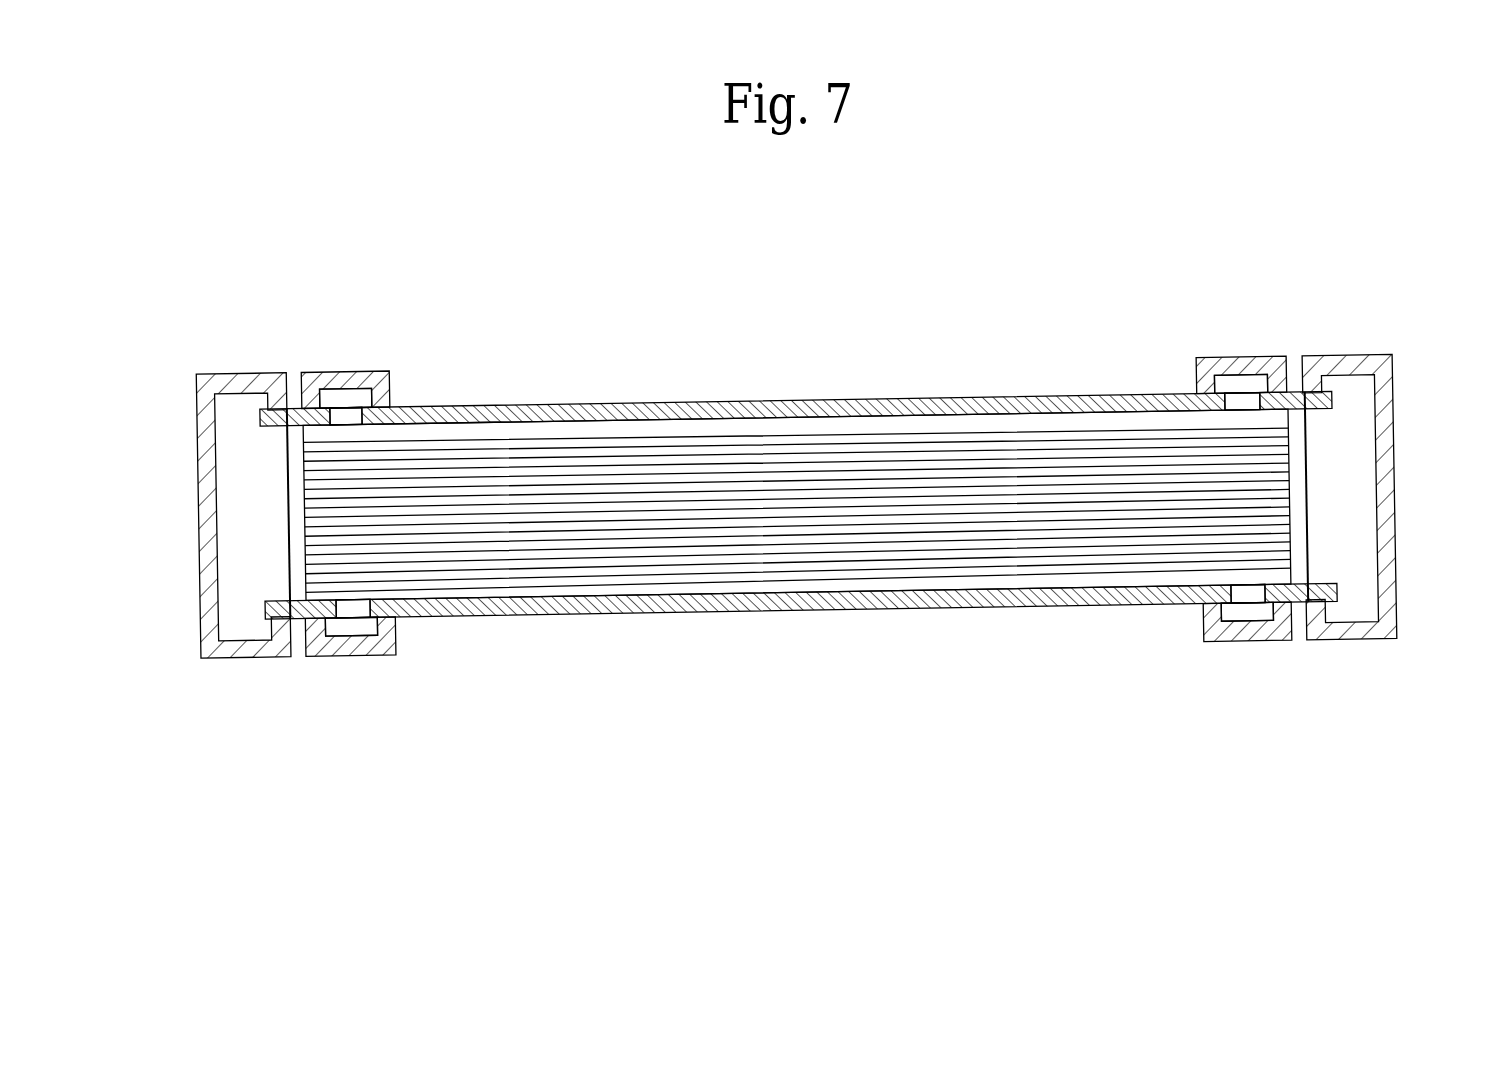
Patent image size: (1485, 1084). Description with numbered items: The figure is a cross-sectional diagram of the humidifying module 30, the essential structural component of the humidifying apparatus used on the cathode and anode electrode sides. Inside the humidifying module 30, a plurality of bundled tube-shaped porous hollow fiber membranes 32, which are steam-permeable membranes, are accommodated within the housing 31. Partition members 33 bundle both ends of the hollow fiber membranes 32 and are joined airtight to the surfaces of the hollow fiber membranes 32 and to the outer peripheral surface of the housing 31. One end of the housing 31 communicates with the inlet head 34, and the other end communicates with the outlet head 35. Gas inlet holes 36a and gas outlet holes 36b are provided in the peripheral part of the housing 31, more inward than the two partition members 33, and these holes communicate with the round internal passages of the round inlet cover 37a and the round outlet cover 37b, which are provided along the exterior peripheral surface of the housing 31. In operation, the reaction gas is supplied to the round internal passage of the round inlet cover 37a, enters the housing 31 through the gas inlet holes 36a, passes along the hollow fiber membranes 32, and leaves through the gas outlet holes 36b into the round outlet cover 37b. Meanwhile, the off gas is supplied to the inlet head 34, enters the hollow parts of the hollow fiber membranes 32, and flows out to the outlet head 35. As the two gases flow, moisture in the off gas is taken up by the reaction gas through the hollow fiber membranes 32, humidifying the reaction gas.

The humidifying module 30 is at (747, 372).
The housing 31 is at (813, 400).
The hollow fiber membranes 32 is at (960, 433).
The partition members 33 is at (286, 520).
The inlet head 34 is at (1348, 355).
The outlet head 35 is at (233, 373).
The gas inlet holes 36a is at (342, 402).
The gas outlet holes 36b is at (1245, 388).
The round inlet cover 37a is at (368, 373).
The round outlet cover 37b is at (1207, 357).